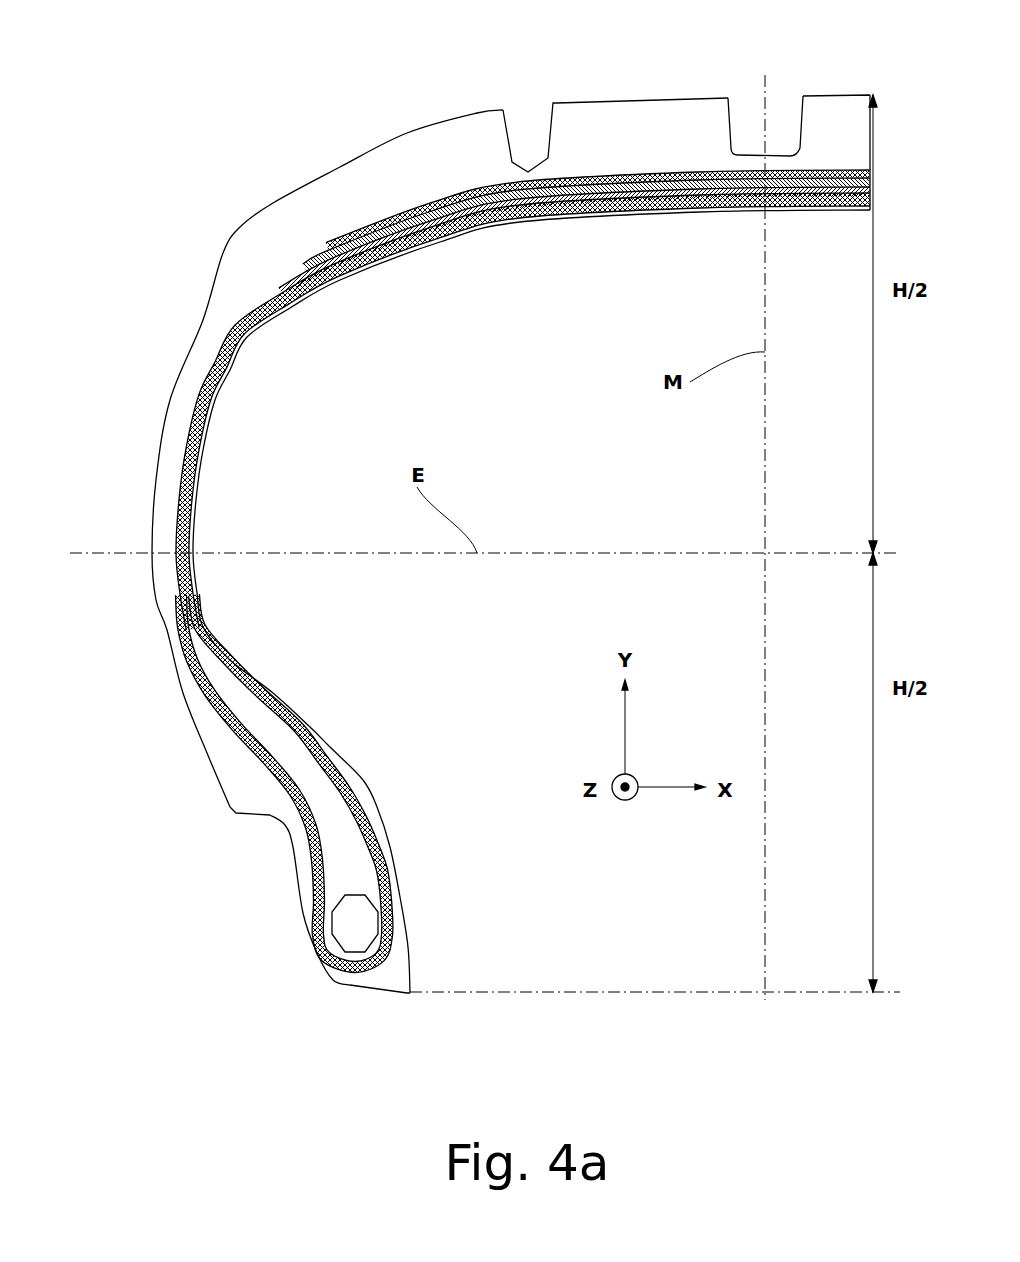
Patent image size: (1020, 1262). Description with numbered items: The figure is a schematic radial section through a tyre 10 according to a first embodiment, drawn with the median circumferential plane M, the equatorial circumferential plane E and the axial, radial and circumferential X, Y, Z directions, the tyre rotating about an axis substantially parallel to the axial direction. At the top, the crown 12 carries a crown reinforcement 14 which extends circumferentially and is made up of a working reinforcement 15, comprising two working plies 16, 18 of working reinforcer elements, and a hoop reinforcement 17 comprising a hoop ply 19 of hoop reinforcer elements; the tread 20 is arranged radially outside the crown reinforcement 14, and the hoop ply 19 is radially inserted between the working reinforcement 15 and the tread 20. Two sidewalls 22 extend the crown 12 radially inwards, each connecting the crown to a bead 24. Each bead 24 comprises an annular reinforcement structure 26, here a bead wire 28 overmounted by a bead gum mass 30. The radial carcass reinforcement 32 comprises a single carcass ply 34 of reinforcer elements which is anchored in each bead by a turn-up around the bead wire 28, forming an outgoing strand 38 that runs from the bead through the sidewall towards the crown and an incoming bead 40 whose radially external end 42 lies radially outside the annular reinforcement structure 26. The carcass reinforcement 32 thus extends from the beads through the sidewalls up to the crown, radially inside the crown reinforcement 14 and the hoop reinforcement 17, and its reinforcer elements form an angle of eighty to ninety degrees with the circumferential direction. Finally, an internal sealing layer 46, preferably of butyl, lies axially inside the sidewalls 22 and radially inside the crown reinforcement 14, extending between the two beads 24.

The tyre 10 is at (248, 98).
The crown 12 is at (628, 130).
The crown reinforcement 14 is at (713, 116).
The working reinforcement 15 is at (285, 280).
The working ply 16 is at (300, 245).
The hoop reinforcement 17 is at (428, 173).
The working ply 18 is at (255, 213).
The hoop ply 19 is at (375, 220).
The tread 20 is at (443, 118).
The sidewall 22 is at (178, 400).
The bead 24 is at (400, 937).
The annular reinforcement structure 26 is at (399, 957).
The bead wire 28 is at (347, 930).
The bead gum mass 30 is at (326, 842).
The radial carcass reinforcement 32 is at (208, 335).
The carcass ply 34 is at (177, 493).
The outgoing strand 38 is at (383, 838).
The incoming bead 40 is at (205, 698).
The radially external end 42 is at (158, 561).
The internal sealing layer 46 is at (232, 388).